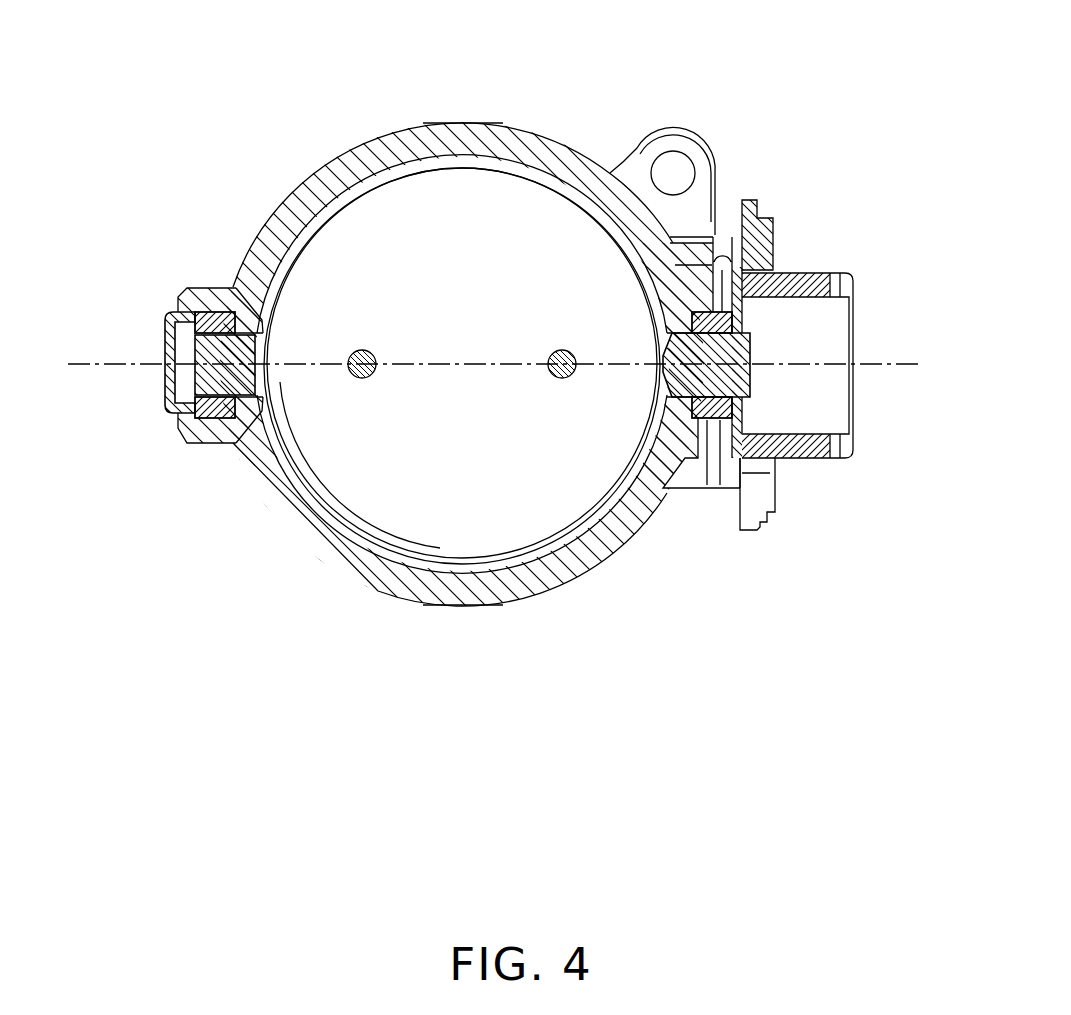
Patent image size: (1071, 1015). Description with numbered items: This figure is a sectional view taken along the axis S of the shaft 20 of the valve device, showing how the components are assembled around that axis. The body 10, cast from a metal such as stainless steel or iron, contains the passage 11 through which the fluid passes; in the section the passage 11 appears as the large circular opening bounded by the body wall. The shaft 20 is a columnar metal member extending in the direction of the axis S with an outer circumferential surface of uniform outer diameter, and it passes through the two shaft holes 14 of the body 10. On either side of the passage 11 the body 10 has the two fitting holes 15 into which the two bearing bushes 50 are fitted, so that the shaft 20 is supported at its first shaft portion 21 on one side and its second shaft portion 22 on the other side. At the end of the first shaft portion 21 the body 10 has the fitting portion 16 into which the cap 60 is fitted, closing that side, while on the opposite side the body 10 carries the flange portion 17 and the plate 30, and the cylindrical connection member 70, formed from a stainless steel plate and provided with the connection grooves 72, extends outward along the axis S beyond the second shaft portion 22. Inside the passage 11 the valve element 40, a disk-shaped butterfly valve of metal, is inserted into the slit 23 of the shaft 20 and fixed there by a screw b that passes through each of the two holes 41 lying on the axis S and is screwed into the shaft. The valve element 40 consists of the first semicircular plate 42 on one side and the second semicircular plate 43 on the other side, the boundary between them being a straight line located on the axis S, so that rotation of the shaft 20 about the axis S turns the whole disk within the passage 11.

The body 10 is at (546, 134).
The passage 11 is at (488, 571).
The shaft holes 14 is at (257, 287).
The fitting holes 15 is at (215, 412).
The fitting portion 16 is at (172, 420).
The flange portion 17 is at (778, 504).
The shaft 20 is at (439, 503).
The first shaft portion 21 is at (209, 400).
The second shaft portion 22 is at (708, 425).
The slit 23 is at (653, 325).
The plate 30 is at (750, 252).
The valve element 40 is at (453, 357).
The holes 41 is at (352, 377).
The first semicircular plate 42 is at (428, 548).
The second semicircular plate 43 is at (392, 188).
The bearing bushes 50 is at (209, 303).
The cap 60 is at (160, 325).
The connection member 70 is at (831, 358).
The connection grooves 72 is at (833, 458).
The axis S is at (878, 372).
The screw b is at (367, 378).